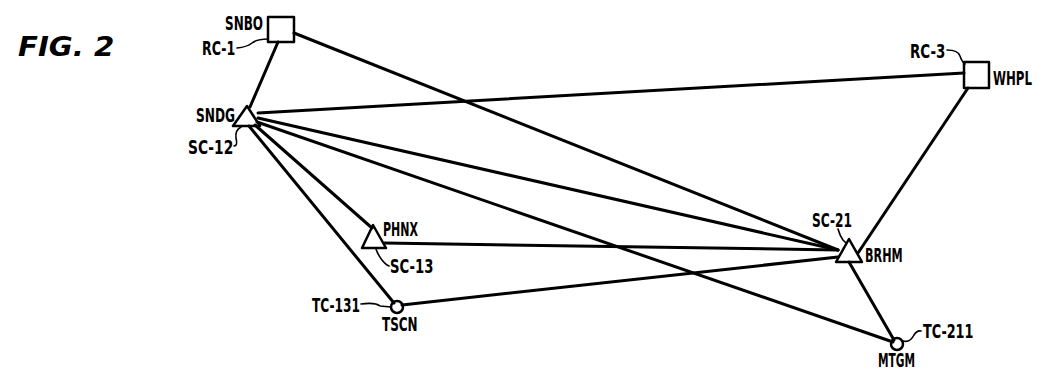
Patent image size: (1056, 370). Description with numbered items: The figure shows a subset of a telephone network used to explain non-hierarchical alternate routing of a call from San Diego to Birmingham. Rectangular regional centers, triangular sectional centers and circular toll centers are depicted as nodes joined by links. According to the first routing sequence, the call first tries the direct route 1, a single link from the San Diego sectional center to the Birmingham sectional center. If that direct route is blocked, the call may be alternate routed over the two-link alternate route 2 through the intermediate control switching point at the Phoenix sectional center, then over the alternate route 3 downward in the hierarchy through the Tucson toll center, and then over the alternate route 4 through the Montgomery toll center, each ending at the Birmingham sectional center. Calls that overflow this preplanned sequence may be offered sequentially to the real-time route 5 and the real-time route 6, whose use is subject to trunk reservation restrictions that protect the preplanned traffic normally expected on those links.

The direct route 1 is at (463, 160).
The alternate route via Phoenix 2 is at (322, 192).
The alternate route via Tucson 3 is at (592, 286).
The alternate route via Montgomery 4 is at (793, 309).
The real-time route 5 is at (383, 67).
The real-time route 6 is at (851, 84).